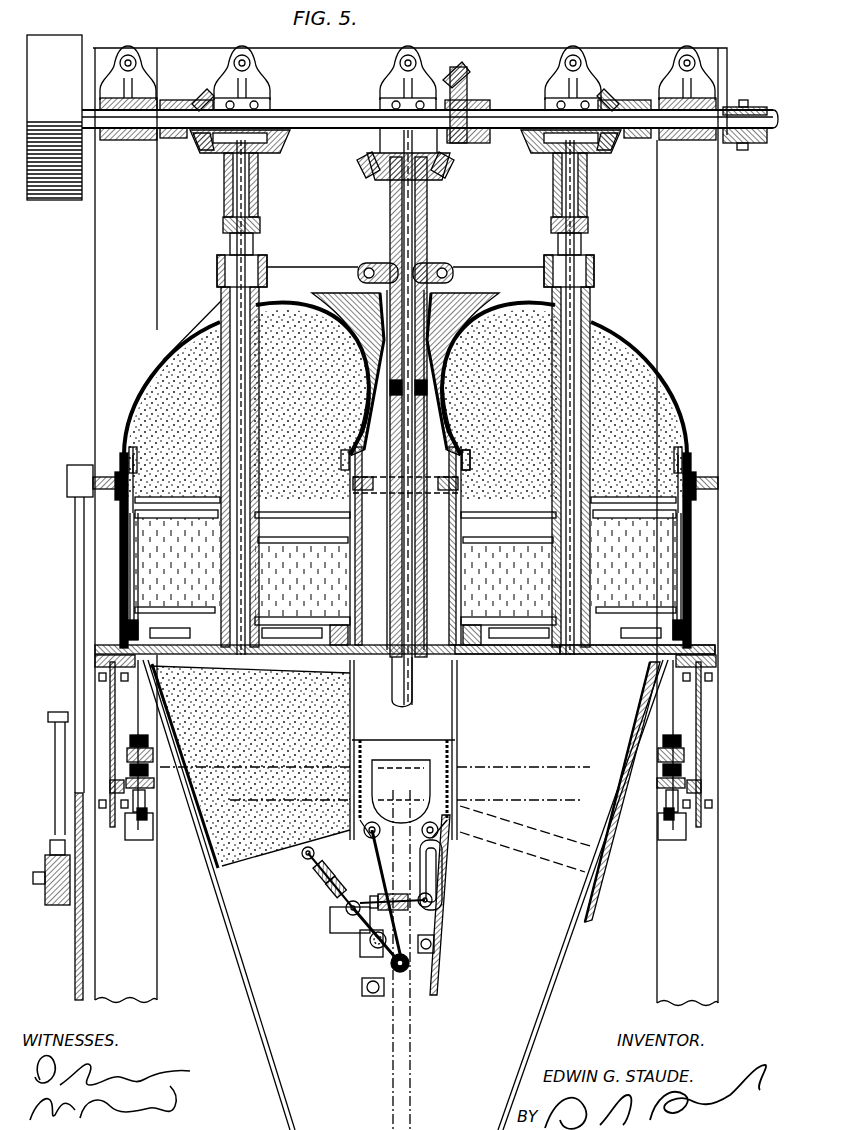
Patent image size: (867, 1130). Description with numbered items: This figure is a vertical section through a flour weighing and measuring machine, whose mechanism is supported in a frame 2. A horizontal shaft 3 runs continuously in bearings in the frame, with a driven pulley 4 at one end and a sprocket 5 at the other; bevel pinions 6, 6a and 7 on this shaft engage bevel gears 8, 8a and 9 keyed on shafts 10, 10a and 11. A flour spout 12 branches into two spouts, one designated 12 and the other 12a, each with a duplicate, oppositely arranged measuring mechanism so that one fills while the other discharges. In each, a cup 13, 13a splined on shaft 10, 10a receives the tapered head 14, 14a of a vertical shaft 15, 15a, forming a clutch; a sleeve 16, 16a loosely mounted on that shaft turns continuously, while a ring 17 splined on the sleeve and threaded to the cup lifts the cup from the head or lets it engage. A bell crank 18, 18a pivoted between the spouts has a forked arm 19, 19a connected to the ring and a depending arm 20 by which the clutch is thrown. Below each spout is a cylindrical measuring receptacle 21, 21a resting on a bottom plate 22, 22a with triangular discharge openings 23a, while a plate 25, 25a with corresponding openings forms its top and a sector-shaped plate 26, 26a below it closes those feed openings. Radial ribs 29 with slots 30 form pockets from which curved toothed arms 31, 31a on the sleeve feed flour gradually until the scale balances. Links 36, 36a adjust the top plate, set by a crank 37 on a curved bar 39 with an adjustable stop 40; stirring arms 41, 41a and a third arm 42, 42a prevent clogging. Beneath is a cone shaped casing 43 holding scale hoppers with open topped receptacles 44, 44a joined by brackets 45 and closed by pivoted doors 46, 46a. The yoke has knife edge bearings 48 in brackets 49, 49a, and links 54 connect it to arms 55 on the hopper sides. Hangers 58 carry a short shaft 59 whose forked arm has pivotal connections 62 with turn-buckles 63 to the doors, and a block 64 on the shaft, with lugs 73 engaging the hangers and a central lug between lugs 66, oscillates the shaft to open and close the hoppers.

The frame 2 is at (712, 292).
The horizontal shaft 3 is at (310, 112).
The driven pulley 4 is at (66, 200).
The sprocket 5 is at (750, 150).
The bevel pinion 6 is at (198, 140).
The bevel pinion 6a is at (624, 146).
The bevel pinion 7 is at (470, 92).
The bevel gear 8 is at (210, 153).
The bevel gear 8a is at (612, 153).
The bevel gear 9 is at (405, 176).
The shaft 10 is at (252, 205).
The shaft 10a is at (592, 212).
The shaft 11 is at (404, 219).
The flour spout 12 is at (190, 282).
The branch spout 12a is at (600, 283).
The cup 13 is at (260, 226).
The cup 13a is at (592, 232).
The tapered head 14 is at (255, 246).
The tapered head 14a is at (592, 248).
The vertically arranged shaft 15 is at (340, 372).
The vertically arranged shaft 15a is at (488, 374).
The sleeve 16 is at (255, 347).
The sleeve 16a is at (570, 355).
The ring 17 is at (196, 310).
The bell crank 18 is at (382, 302).
The bell crank 18a is at (432, 302).
The forked arm 19 is at (303, 280).
The forked arm 19a is at (480, 278).
The depending arm 20 is at (388, 520).
The cylindrical receptacle 21 is at (135, 545).
The cylindrical receptacle 21a is at (705, 576).
The plate 22 is at (95, 650).
The plate 22a is at (620, 662).
The discharge openings 23a is at (518, 658).
The plate 25 is at (247, 546).
The plate 25a is at (563, 546).
The sector-shaped plate 26 is at (242, 526).
The sector-shaped plate 26a is at (568, 532).
The radial ribs 29 is at (270, 635).
The slots 30 is at (297, 638).
The curved toothed arms 31 is at (210, 660).
The curved toothed arms 31a is at (391, 619).
The links 36 is at (138, 466).
The links 36a is at (470, 479).
The crank 37 is at (75, 937).
The curved bar 39 is at (60, 800).
The adjustable stop 40 is at (50, 868).
The stirring arms 41 is at (242, 567).
The stirring arms 41a is at (568, 567).
The third arm 42 is at (177, 487).
The third arm 42a is at (600, 490).
The cone shaped casing 43 is at (576, 930).
The open topped receptacle 44 is at (350, 723).
The open topped receptacle 44a is at (458, 716).
The brackets 45 is at (405, 742).
The pivoted door 46 is at (250, 858).
The pivoted door 46a is at (447, 883).
The knife edge bearings 48 is at (690, 805).
The brackets 49 is at (110, 691).
The brackets 49a is at (713, 704).
The links 54 is at (134, 848).
The arms 55 is at (132, 760).
The hangers 58 is at (415, 875).
The short shaft 59 is at (416, 975).
The pivotal connections 62 is at (333, 905).
The turn-buckles 63 is at (385, 897).
The block 64 is at (395, 980).
The lugs 66 is at (362, 950).
The lugs 73 is at (440, 945).